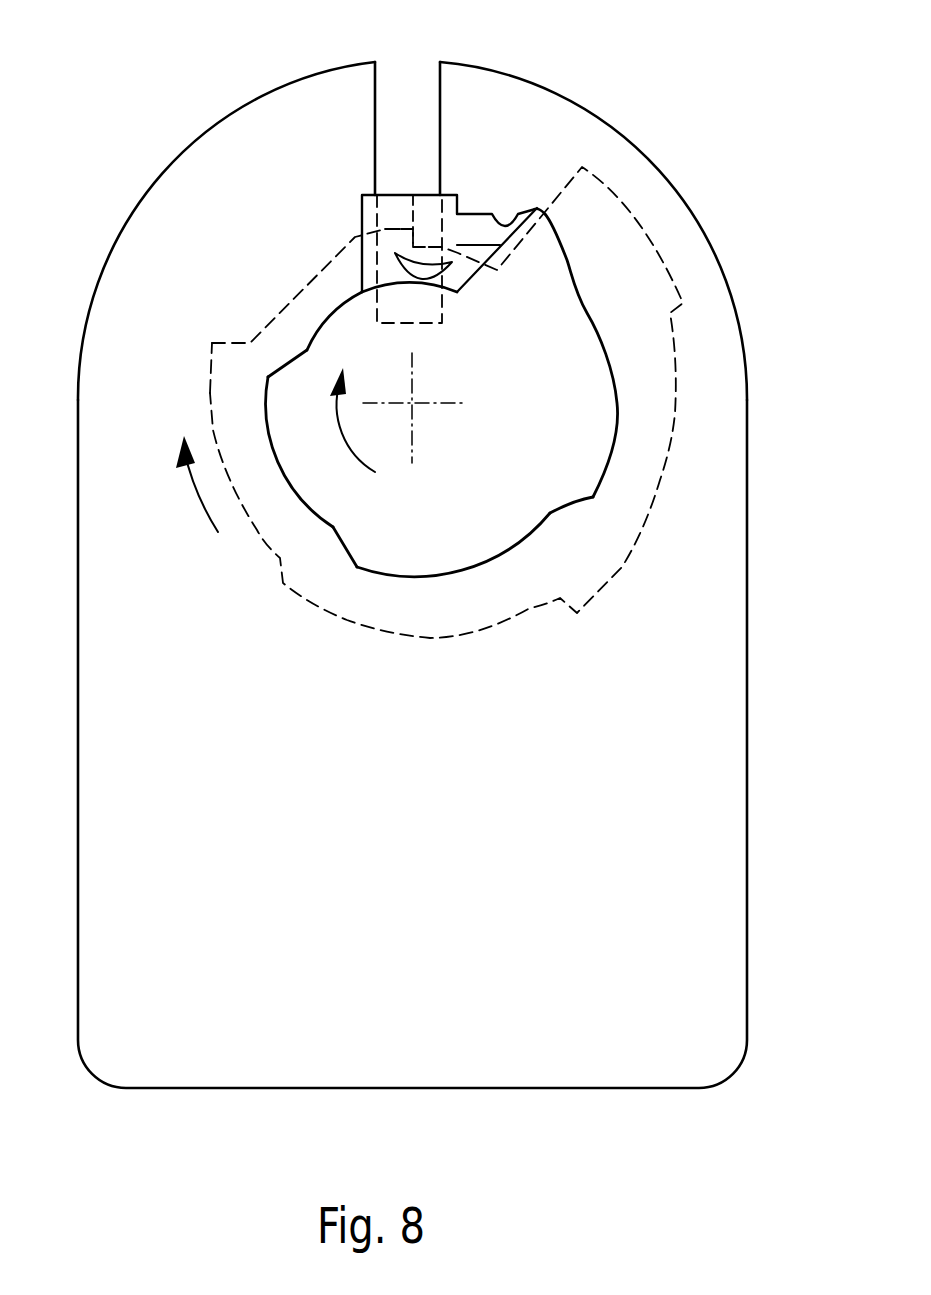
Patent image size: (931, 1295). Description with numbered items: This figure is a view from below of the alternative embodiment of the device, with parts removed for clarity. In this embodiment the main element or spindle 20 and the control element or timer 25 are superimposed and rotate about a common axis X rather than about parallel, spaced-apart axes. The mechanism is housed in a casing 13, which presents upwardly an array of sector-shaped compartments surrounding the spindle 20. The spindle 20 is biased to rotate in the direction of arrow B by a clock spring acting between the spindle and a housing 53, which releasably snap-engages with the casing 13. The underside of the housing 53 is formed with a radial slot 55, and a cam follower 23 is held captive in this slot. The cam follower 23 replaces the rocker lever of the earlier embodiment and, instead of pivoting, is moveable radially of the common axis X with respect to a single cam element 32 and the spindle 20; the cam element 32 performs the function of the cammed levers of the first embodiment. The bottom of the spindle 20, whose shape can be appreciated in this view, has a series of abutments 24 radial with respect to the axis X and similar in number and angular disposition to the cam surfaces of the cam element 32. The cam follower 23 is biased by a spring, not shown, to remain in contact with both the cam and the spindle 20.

The casing 13 is at (692, 778).
The housing 53 is at (168, 252).
The radial slot 55 is at (378, 85).
The cam follower 23 is at (362, 262).
The control element or timer 25 is at (550, 382).
The cam element 32 is at (280, 362).
The abutments 24 is at (238, 342).
The main element or spindle 20 is at (210, 400).
The arrow B is at (200, 503).
The common axis X is at (505, 430).